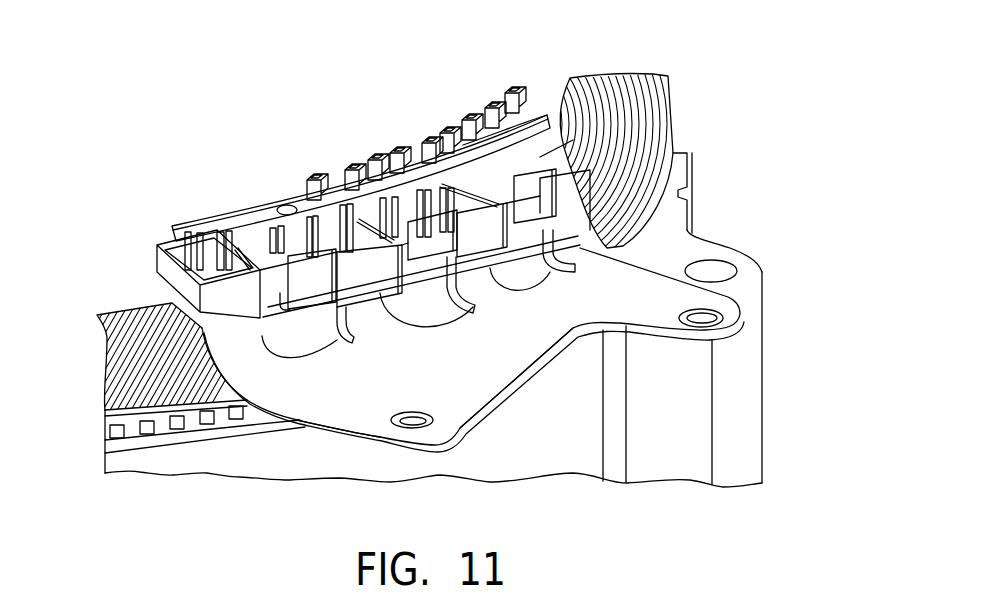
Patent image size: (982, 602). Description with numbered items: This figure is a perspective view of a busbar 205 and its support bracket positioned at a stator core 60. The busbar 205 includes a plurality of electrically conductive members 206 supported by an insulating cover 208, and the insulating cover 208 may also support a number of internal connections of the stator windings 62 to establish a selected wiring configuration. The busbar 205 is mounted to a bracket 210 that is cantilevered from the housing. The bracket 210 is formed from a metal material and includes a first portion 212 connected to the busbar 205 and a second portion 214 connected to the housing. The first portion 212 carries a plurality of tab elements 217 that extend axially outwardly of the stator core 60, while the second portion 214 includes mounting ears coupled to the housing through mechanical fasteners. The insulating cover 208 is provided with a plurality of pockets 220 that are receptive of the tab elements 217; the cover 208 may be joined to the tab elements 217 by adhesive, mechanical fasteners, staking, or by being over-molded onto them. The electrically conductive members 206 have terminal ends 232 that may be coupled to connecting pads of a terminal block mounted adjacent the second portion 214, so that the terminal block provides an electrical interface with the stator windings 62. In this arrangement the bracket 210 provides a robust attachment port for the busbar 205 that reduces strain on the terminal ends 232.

The stator core 60 is at (243, 453).
The stator windings 62 is at (120, 342).
The busbar 205 is at (405, 179).
The electrically conductive members 206 is at (433, 233).
The insulating cover 208 is at (173, 283).
The bracket 210 is at (674, 350).
The first portion 212 is at (480, 287).
The second portion 214 is at (340, 400).
The tab elements 217 is at (455, 411).
The pockets 220 is at (577, 238).
The terminal ends 232 is at (313, 267).